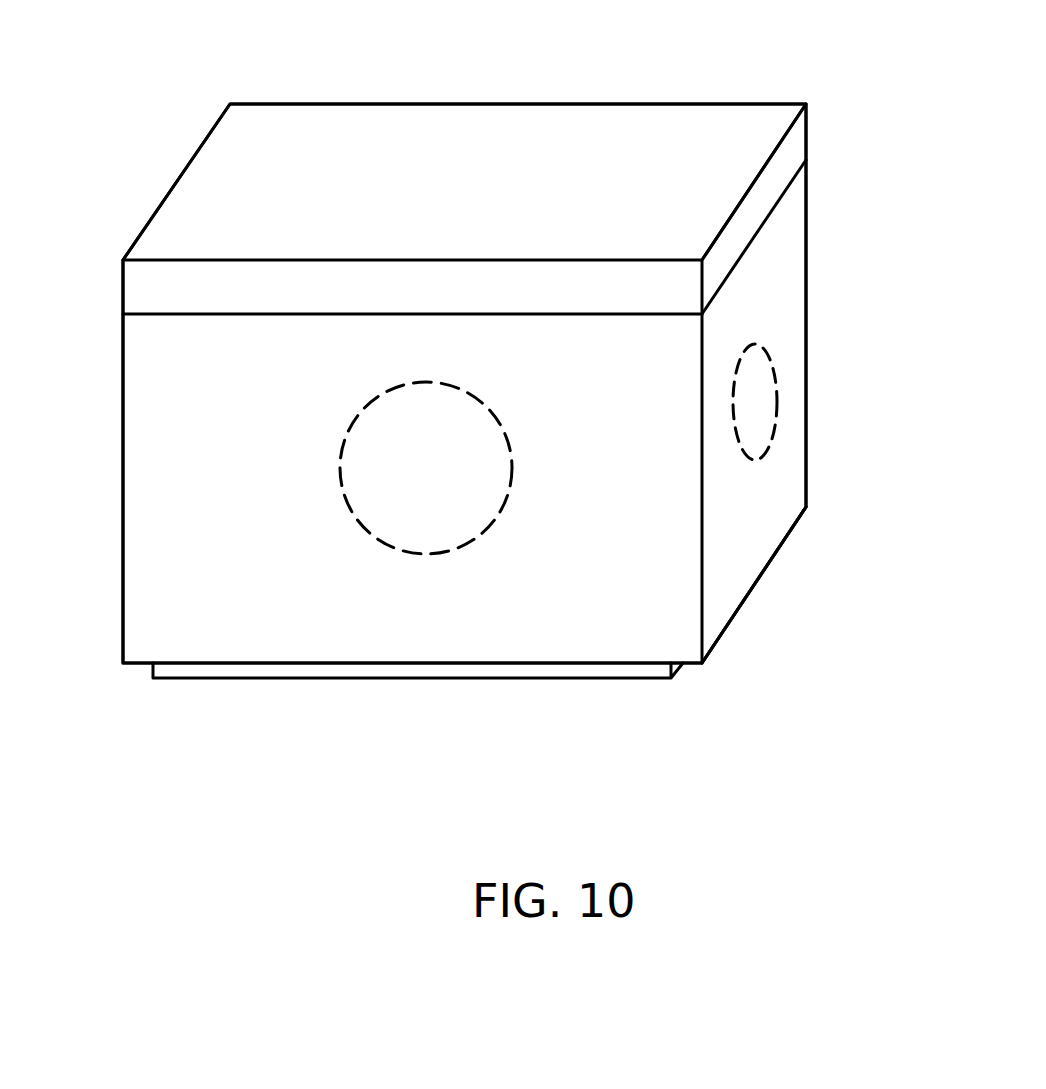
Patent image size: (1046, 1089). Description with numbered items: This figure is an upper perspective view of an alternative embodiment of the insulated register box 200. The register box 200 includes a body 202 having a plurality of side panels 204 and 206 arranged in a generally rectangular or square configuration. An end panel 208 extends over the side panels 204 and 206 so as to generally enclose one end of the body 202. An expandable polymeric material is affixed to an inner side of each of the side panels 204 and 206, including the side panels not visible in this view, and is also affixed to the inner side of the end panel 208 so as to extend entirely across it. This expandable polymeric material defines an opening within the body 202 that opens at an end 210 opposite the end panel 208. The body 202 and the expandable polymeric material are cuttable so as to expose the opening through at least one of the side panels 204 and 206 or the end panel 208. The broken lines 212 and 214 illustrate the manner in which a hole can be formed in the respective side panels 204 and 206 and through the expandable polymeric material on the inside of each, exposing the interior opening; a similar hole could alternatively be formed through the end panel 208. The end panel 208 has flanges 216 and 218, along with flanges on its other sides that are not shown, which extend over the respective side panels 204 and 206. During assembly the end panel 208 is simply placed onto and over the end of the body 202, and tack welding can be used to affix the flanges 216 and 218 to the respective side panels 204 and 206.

The register box 200 is at (864, 283).
The body 202 is at (792, 470).
The side panel 204 is at (142, 590).
The side panel 206 is at (767, 552).
The end panel 208 is at (653, 113).
The end 210 is at (510, 670).
The broken lines 212 is at (487, 530).
The broken lines 214 is at (755, 460).
The flange 216 is at (588, 305).
The flange 218 is at (755, 208).